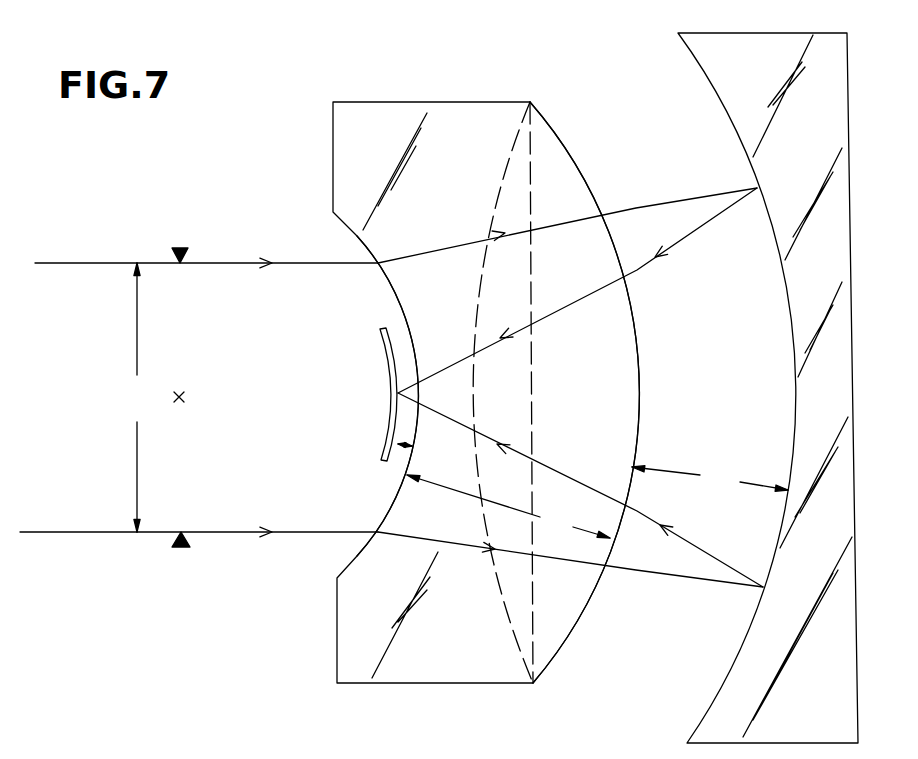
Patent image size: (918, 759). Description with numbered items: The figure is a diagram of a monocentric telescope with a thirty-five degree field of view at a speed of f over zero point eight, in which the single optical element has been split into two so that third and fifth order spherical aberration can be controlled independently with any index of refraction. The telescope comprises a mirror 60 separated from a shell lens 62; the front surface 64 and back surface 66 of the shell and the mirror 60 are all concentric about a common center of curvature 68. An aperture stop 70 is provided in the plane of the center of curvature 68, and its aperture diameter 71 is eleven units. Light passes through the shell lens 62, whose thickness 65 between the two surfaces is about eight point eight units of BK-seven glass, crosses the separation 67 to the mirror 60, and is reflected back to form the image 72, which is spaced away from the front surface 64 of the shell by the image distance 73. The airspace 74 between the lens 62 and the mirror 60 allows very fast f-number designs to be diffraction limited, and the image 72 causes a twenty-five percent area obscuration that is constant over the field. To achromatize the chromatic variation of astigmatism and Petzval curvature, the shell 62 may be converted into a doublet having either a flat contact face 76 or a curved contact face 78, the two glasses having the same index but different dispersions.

The mirror 60 is at (784, 286).
The shell lens 62 is at (455, 102).
The front surface 64 is at (390, 508).
The thickness 65 is at (570, 387).
The back surface 66 is at (637, 440).
The separation 67 is at (710, 478).
The center of curvature 68 is at (186, 394).
The aperture stop 70 is at (184, 250).
The aperture diameter 71 is at (133, 397).
The image 72 is at (392, 417).
The image distance 73 is at (400, 447).
The airspace 74 is at (664, 641).
The flat contact face 76 is at (530, 187).
The curved contact face 78 is at (480, 293).